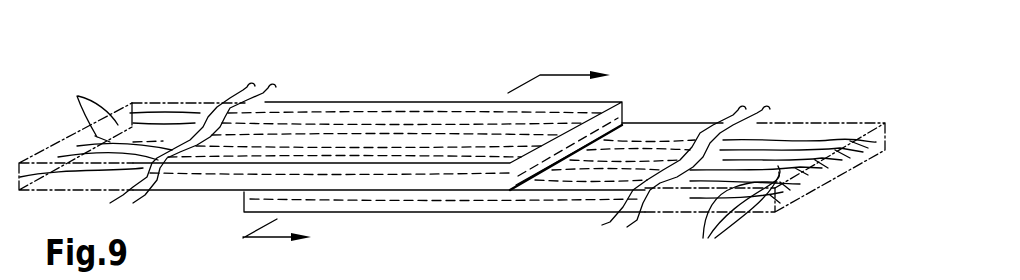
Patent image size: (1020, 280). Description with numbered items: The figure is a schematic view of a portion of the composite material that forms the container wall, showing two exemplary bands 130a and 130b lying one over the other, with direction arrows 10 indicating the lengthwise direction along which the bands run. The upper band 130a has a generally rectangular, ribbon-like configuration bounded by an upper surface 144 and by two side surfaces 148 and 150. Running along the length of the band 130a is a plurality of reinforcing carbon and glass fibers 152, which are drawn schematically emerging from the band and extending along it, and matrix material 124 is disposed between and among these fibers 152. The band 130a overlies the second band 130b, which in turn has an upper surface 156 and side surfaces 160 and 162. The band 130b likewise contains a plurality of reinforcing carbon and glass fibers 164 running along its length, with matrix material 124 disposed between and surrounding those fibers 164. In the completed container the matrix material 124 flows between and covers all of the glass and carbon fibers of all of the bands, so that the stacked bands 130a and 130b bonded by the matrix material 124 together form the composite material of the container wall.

The machine direction arrow 10 is at (442, 158).
The matrix material 124 is at (460, 105).
The band 130a is at (191, 78).
The band 130b is at (725, 52).
The upper surface 144 is at (309, 121).
The side surface 148 is at (400, 102).
The side surface 150 is at (226, 180).
The reinforcing carbon and glass fibers 152 is at (110, 127).
The upper surface 156 is at (676, 145).
The side surface 160 is at (657, 121).
The side surface 162 is at (529, 201).
The reinforcing carbon and glass fibers 164 is at (721, 214).